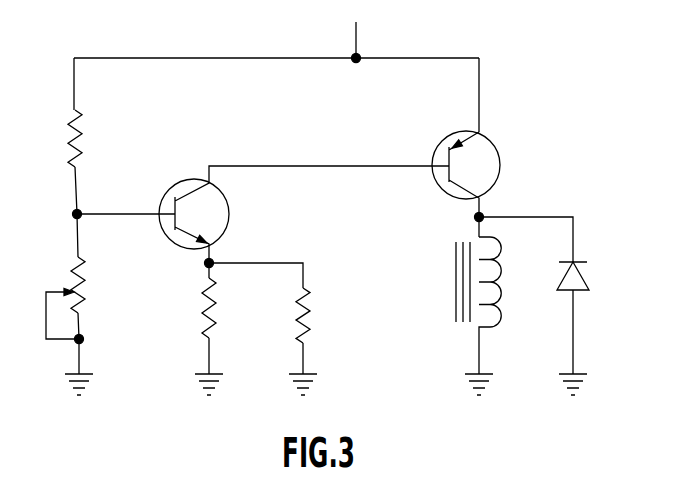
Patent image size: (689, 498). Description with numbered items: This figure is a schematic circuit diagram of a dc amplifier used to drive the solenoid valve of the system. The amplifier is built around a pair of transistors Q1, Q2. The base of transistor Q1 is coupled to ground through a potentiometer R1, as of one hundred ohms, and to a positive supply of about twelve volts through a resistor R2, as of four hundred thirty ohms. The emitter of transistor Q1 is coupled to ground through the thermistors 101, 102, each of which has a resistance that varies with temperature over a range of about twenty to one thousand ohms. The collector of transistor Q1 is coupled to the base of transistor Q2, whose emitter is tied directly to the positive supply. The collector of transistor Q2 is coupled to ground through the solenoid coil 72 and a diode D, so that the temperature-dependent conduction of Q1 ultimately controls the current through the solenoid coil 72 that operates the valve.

The resistor R2 is at (62, 138).
The potentiometer R1 is at (79, 300).
The transistor Q1 is at (299, 214).
The transistor Q2 is at (462, 166).
The thermistor 101 is at (204, 309).
The thermistor 102 is at (308, 316).
The solenoid coil 72 is at (502, 285).
The diode D is at (586, 281).